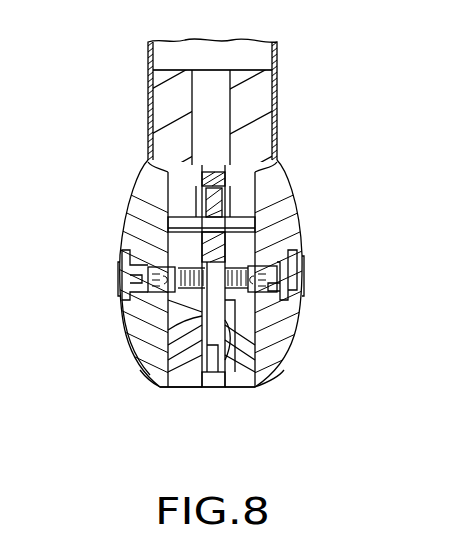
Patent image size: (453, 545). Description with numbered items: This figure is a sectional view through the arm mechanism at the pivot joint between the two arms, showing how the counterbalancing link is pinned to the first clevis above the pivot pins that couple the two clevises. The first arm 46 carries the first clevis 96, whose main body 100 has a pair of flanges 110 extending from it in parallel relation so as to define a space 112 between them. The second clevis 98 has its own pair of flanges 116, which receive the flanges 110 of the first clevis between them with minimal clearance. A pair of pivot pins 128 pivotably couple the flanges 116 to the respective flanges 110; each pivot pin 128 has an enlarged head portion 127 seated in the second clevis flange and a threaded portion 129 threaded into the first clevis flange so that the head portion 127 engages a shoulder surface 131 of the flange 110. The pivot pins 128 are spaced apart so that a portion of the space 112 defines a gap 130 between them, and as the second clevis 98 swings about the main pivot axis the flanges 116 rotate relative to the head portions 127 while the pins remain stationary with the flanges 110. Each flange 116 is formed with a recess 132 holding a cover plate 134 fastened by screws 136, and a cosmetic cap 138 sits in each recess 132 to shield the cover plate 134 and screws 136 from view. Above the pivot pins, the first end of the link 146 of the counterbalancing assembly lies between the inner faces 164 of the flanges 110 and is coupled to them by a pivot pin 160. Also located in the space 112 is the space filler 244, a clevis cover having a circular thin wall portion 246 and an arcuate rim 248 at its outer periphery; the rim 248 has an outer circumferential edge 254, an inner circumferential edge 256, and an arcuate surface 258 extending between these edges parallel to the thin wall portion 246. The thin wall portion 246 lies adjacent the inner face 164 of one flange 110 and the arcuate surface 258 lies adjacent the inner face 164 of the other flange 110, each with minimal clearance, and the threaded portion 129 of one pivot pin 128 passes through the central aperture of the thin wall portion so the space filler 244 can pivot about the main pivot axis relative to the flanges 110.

The first arm 46 is at (150, 56).
The main body 100 is at (163, 108).
The first clevis 96 is at (178, 62).
The space filler 244 is at (222, 163).
The second clevis 98 is at (135, 170).
The link 146 is at (168, 212).
The shoulder surface 131 is at (205, 222).
The pivot pin 160 is at (243, 205).
The gap 130 is at (238, 222).
The enlarged head portion 127 is at (205, 246).
The pivot pins 128 is at (150, 288).
The threaded portion 129 is at (185, 320).
The cover plates 134 is at (290, 280).
The recess 132 is at (128, 280).
The cosmetic caps 138 is at (117, 278).
The screws 136 is at (276, 285).
The thin wall portion 246 is at (190, 335).
The inner face 164 is at (185, 355).
The inner circumferential edge 256 is at (133, 368).
The flanges 116 is at (138, 381).
The flanges 110 is at (182, 383).
The arcuate rim 248 is at (207, 383).
The outer circumferential edge 254 is at (217, 388).
The arcuate surface 258 is at (233, 388).
The space 112 is at (222, 350).